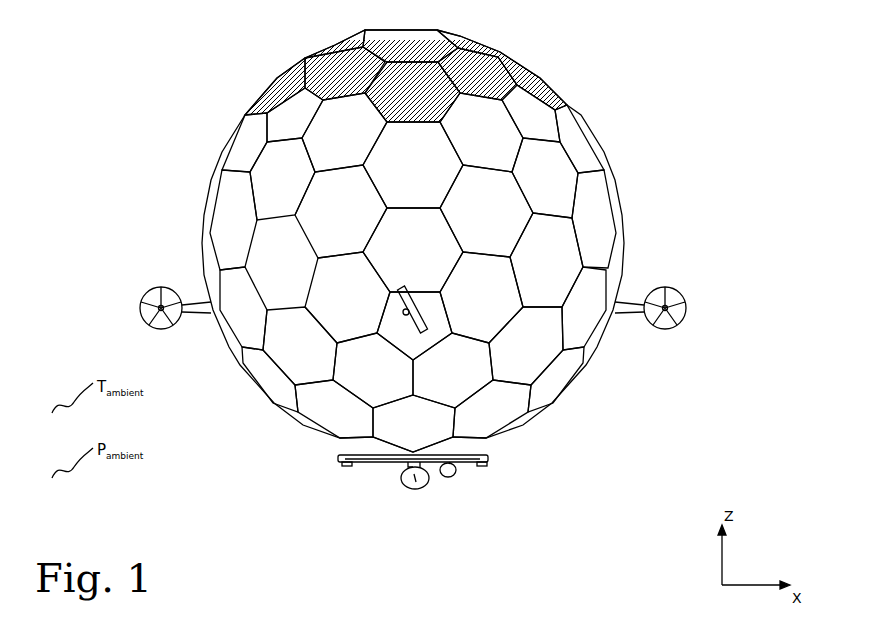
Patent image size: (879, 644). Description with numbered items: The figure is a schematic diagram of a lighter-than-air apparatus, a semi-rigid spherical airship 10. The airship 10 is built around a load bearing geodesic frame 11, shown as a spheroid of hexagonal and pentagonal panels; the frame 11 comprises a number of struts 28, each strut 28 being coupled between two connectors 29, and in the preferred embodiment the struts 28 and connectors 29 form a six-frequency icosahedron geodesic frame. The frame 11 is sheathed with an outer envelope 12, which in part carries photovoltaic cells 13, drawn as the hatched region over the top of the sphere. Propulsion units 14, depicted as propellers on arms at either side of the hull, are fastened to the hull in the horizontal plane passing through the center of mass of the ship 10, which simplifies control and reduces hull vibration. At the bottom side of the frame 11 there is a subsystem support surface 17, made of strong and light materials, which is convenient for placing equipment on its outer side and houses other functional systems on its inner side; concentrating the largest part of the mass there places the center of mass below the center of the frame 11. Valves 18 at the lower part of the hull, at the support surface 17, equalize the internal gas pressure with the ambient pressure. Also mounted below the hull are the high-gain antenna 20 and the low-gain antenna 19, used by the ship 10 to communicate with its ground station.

The semi-rigid spherical airship 10 is at (198, 104).
The load bearing geodesic frame 11 is at (577, 162).
The outer envelope 12 is at (275, 202).
The photovoltaic cells 13 is at (347, 80).
The propulsion units 14 is at (140, 306).
The subsystem support surface 17 is at (383, 456).
The valves 18 is at (345, 464).
The low-gain antenna 19 is at (455, 478).
The high-gain antenna 20 is at (402, 486).
The struts 28 is at (518, 122).
The connectors 29 is at (578, 220).